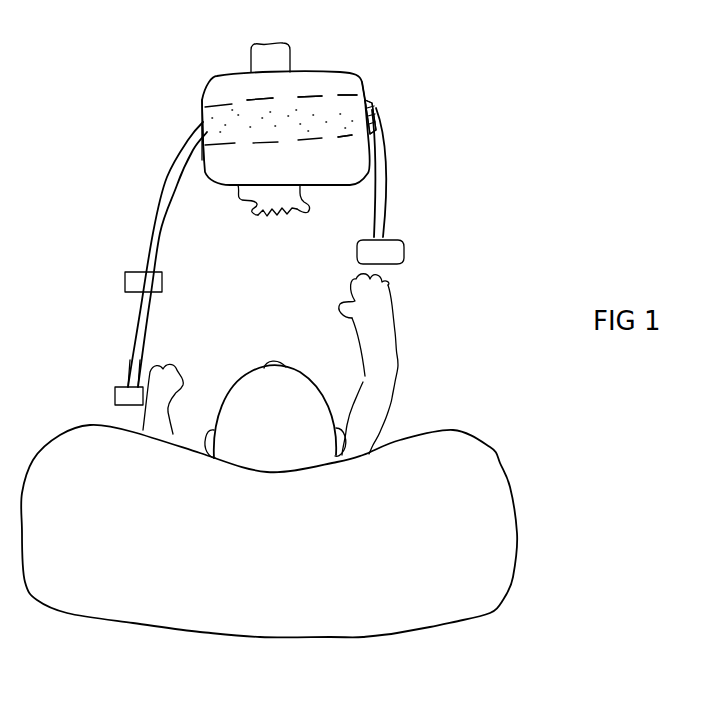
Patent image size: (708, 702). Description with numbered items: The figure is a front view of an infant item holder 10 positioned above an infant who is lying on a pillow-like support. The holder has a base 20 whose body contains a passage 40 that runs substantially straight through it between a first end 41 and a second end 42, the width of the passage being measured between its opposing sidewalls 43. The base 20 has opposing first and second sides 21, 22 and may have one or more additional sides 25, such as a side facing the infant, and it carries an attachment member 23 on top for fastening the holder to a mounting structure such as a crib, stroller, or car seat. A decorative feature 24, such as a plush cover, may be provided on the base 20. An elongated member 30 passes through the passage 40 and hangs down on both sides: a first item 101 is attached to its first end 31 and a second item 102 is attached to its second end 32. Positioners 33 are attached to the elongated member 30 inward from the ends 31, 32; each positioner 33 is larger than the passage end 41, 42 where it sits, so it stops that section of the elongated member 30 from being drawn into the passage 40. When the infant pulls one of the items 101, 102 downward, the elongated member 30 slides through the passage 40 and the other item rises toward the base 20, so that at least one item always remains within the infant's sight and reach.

The infant item holder 10 is at (450, 82).
The base 20 is at (218, 82).
The first side 21 is at (202, 100).
The second side 22 is at (363, 80).
The attachment member 23 is at (255, 43).
The decorative feature 24 is at (295, 211).
The additional side 25 is at (265, 212).
The elongated member 30 is at (173, 153).
The first end 31 is at (127, 377).
The second end 32 is at (383, 232).
The positioner 33 is at (125, 277).
The passage 40 is at (273, 107).
The first end of passage 41 is at (205, 145).
The second end of passage 42 is at (370, 98).
The sidewall 43 is at (322, 92).
The first item 101 is at (117, 392).
The second item 102 is at (400, 247).